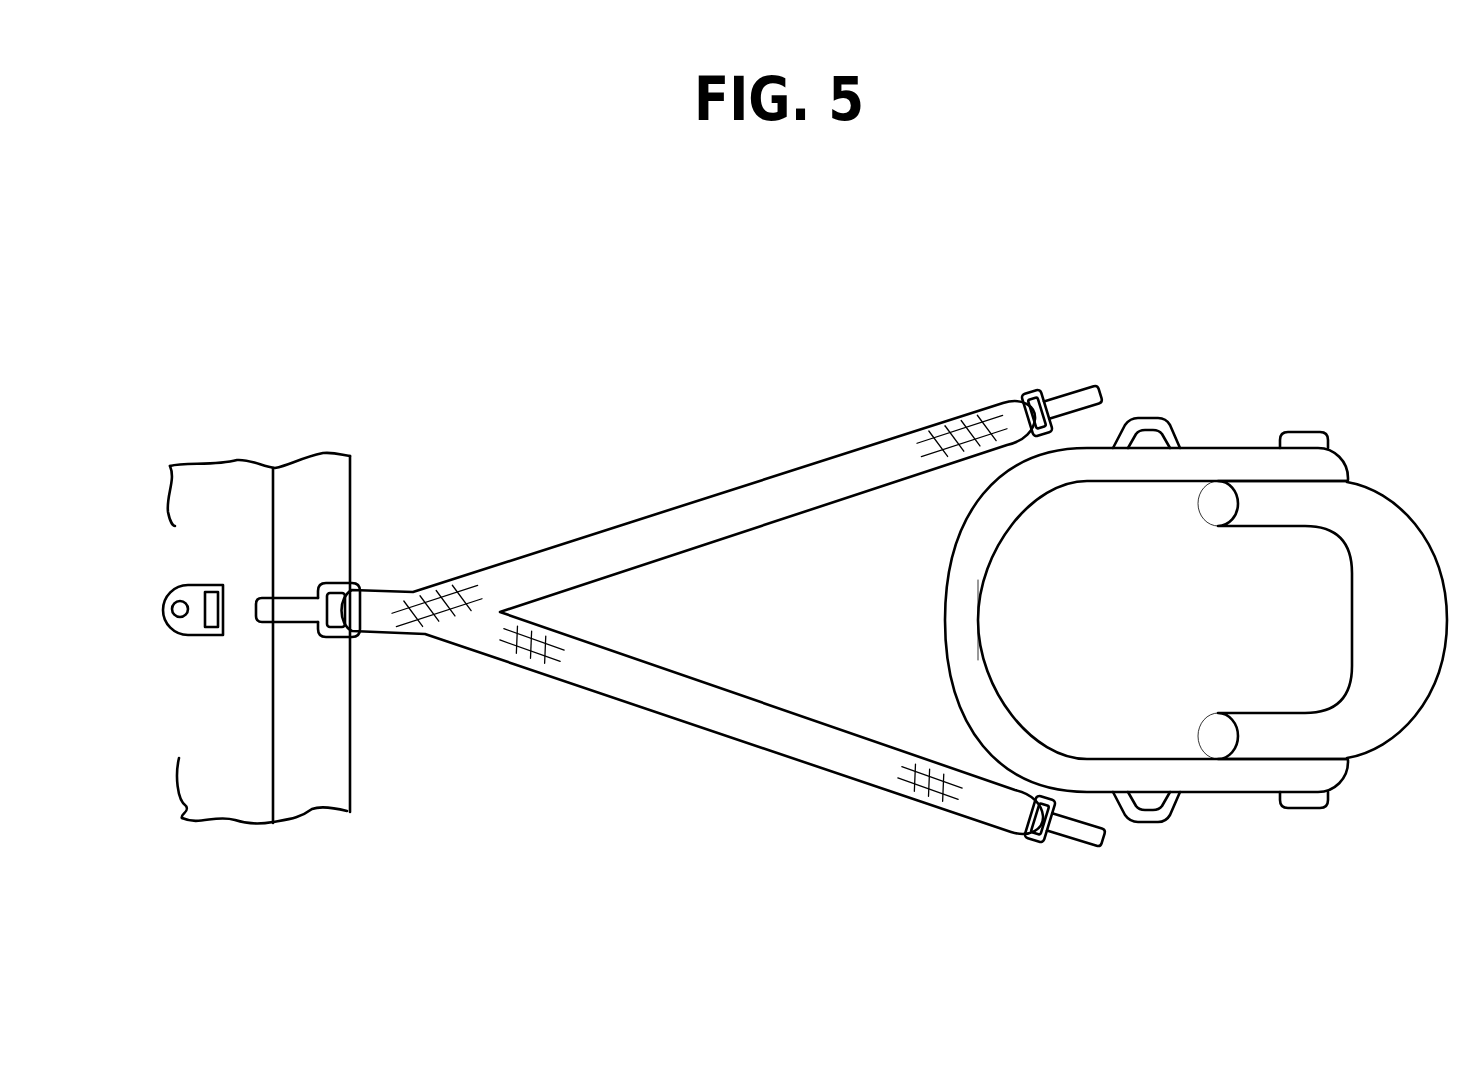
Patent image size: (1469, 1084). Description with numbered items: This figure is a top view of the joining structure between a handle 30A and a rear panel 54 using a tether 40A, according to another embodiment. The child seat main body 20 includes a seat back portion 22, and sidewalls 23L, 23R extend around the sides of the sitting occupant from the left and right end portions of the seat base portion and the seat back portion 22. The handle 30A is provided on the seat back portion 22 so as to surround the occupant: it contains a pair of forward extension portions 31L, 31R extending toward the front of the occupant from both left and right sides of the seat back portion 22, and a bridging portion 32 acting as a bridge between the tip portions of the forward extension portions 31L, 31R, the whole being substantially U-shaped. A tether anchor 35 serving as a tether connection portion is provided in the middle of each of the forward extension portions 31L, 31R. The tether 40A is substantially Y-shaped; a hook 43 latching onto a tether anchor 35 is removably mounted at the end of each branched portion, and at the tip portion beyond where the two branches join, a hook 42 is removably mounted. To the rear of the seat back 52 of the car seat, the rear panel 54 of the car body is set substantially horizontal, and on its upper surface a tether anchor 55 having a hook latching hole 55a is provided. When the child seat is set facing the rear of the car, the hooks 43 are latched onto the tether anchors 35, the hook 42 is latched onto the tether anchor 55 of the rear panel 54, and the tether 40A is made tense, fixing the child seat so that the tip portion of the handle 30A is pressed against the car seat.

The child seat main body 20 is at (1122, 624).
The seat back portion 22 is at (1351, 618).
The sidewall 23R is at (1220, 513).
The sidewall 23L is at (1223, 716).
The handle 30A is at (938, 637).
The forward extension portion 31R is at (1113, 482).
The forward extension portion 31L is at (1110, 757).
The bridging portion 32 is at (978, 625).
The tether anchor 35 is at (1155, 418).
The tether 40A is at (652, 493).
The hook 42 is at (295, 597).
The hook 43 is at (1077, 390).
The seat back 52 is at (343, 752).
The rear panel 54 is at (205, 822).
The tether anchor 55 is at (169, 597).
The hook latching hole 55a is at (216, 586).